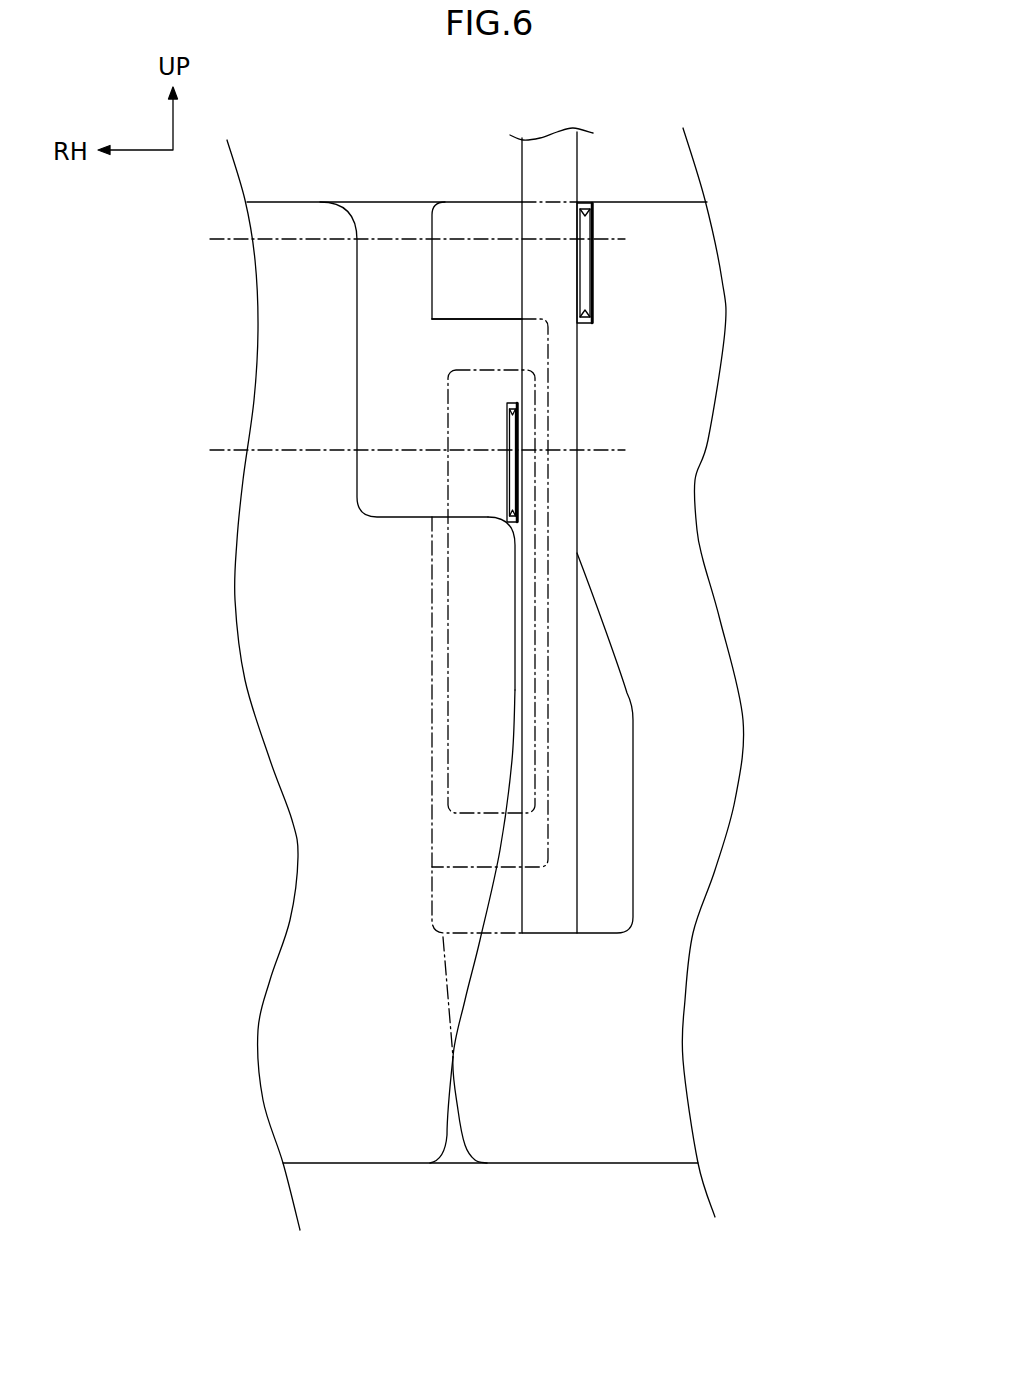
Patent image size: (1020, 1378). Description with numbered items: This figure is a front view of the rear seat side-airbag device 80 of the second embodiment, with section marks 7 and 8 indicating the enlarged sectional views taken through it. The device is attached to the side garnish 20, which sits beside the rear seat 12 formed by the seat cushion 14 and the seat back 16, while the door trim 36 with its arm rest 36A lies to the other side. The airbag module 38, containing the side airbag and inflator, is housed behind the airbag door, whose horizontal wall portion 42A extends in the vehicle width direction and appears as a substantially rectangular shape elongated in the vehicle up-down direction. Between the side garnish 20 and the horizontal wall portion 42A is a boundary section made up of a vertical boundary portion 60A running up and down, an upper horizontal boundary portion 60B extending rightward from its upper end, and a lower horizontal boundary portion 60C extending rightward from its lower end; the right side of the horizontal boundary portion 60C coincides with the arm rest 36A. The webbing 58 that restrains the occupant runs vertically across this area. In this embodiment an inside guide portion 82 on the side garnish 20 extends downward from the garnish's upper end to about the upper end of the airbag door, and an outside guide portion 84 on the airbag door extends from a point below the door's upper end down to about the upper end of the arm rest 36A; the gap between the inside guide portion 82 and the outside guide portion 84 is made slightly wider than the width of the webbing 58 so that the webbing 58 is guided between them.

The section line 7- 7 is at (620, 230).
The section line 8- 8 is at (620, 440).
The rear seat 12 is at (616, 1190).
The seat cushion 14 is at (667, 1060).
The seat back 16 is at (710, 367).
The side garnish 20 is at (467, 220).
The door trim 36 is at (280, 190).
The arm rest 36A is at (410, 515).
The airbag module 38 is at (440, 362).
The horizontal wall portion 42A is at (485, 330).
The webbing 58 is at (550, 152).
The vertical boundary portion 60A is at (547, 480).
The horizontal boundary portion 60B is at (455, 318).
The horizontal boundary portion 60C is at (507, 870).
The rear seat side-airbag device 80 is at (432, 149).
The inside guide portion 82 is at (590, 288).
The outside guide portion 84 is at (508, 480).